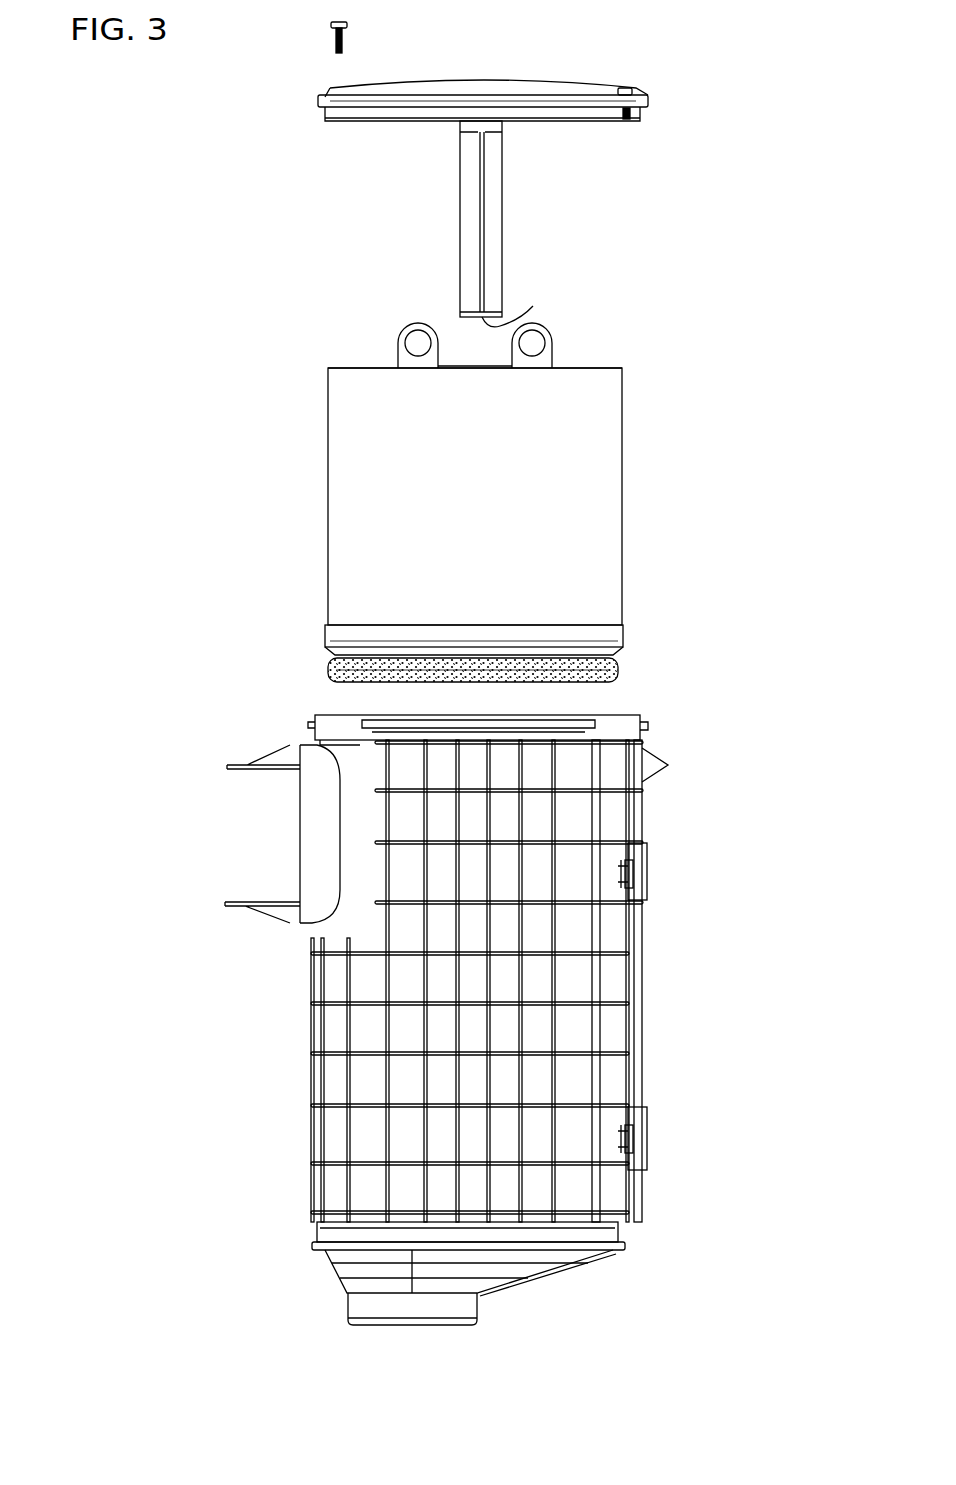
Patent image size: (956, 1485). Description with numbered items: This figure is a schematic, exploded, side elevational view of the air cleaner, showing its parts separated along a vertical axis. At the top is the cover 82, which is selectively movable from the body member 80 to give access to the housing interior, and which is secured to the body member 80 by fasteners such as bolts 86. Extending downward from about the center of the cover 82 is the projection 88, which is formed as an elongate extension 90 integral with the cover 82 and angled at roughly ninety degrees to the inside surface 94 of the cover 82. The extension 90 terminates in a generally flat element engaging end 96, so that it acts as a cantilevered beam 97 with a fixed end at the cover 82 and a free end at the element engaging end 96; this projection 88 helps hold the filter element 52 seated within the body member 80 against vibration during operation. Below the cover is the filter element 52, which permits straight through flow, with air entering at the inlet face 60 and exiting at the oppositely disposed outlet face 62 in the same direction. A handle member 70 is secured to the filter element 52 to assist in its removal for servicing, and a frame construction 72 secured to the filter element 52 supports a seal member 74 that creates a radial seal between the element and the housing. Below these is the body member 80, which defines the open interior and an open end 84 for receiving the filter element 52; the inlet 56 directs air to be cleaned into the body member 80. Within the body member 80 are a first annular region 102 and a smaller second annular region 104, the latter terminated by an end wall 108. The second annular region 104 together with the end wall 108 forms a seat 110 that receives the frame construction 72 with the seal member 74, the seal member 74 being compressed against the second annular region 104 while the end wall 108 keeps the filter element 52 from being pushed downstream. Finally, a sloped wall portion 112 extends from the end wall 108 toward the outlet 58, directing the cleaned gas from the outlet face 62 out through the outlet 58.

The filter element 52 is at (459, 503).
The inlet 56 is at (248, 902).
The outlet 58 is at (477, 1320).
The inlet face 60 is at (607, 368).
The outlet face 62 is at (568, 368).
The handle member 70 is at (398, 343).
The frame construction 72 is at (623, 643).
The seal member 74 is at (327, 662).
The body member 80 is at (512, 948).
The cover 82 is at (523, 82).
The open end 84 is at (622, 715).
The bolts 86 is at (348, 33).
The projection 88 is at (431, 224).
The elongate extension 90 is at (503, 248).
The inside surface 94 is at (585, 123).
The element engaging end 96 is at (533, 306).
The cantilevered beam 97 is at (503, 195).
The first annular region 102 is at (625, 1088).
The second annular region 104 is at (620, 1230).
The end wall 108 is at (322, 1250).
The seat 110 is at (465, 1282).
The sloped wall portion 112 is at (548, 1272).